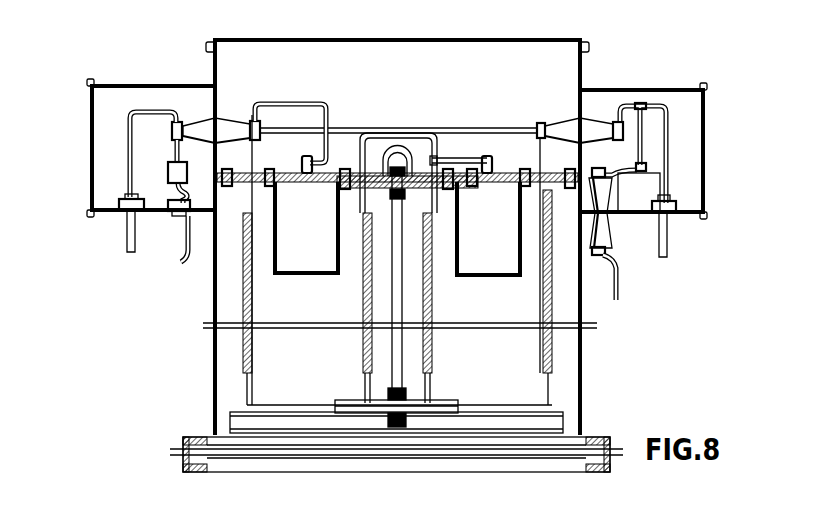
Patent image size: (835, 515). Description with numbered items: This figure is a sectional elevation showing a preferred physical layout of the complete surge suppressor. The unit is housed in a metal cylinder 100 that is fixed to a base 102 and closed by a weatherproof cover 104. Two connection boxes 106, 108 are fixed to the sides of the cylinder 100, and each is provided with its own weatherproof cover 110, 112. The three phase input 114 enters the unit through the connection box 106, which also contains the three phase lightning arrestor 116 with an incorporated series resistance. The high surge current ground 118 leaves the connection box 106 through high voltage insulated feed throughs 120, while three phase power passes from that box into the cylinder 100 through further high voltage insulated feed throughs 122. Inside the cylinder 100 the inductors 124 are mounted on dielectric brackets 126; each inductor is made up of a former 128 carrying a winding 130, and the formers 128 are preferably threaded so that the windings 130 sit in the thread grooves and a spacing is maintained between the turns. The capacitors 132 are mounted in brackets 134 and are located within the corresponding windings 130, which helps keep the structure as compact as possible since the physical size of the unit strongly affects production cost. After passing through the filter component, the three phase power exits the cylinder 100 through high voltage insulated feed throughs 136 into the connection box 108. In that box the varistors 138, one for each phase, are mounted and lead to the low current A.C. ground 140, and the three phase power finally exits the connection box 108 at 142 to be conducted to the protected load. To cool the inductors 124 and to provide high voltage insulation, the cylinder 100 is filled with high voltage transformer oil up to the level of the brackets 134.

The metal cylinder 100 is at (213, 300).
The base 102 is at (185, 440).
The weatherproof cover 104 is at (553, 42).
The connection box 106 is at (662, 135).
The connection box 108 is at (133, 131).
The weatherproof cover 110 is at (707, 127).
The weatherproof cover 112 is at (88, 110).
The three phase input 114 is at (668, 231).
The three phase lightning arrestor 116 is at (641, 193).
The high surge current ground 118 is at (615, 287).
The high voltage insulated feed throughs 120 is at (605, 232).
The high voltage insulated feed throughs 122 is at (597, 128).
The inductors 124 is at (556, 359).
The dielectric brackets 126 is at (373, 177).
The formers 128 is at (247, 388).
The windings 130 is at (243, 280).
The capacitors 132 is at (300, 274).
The brackets 134 is at (535, 165).
The high voltage insulated feed throughs 136 is at (227, 125).
The varistors 138 is at (172, 172).
The low current A.C. ground 140 is at (185, 255).
The three phase power exit 142 is at (126, 228).